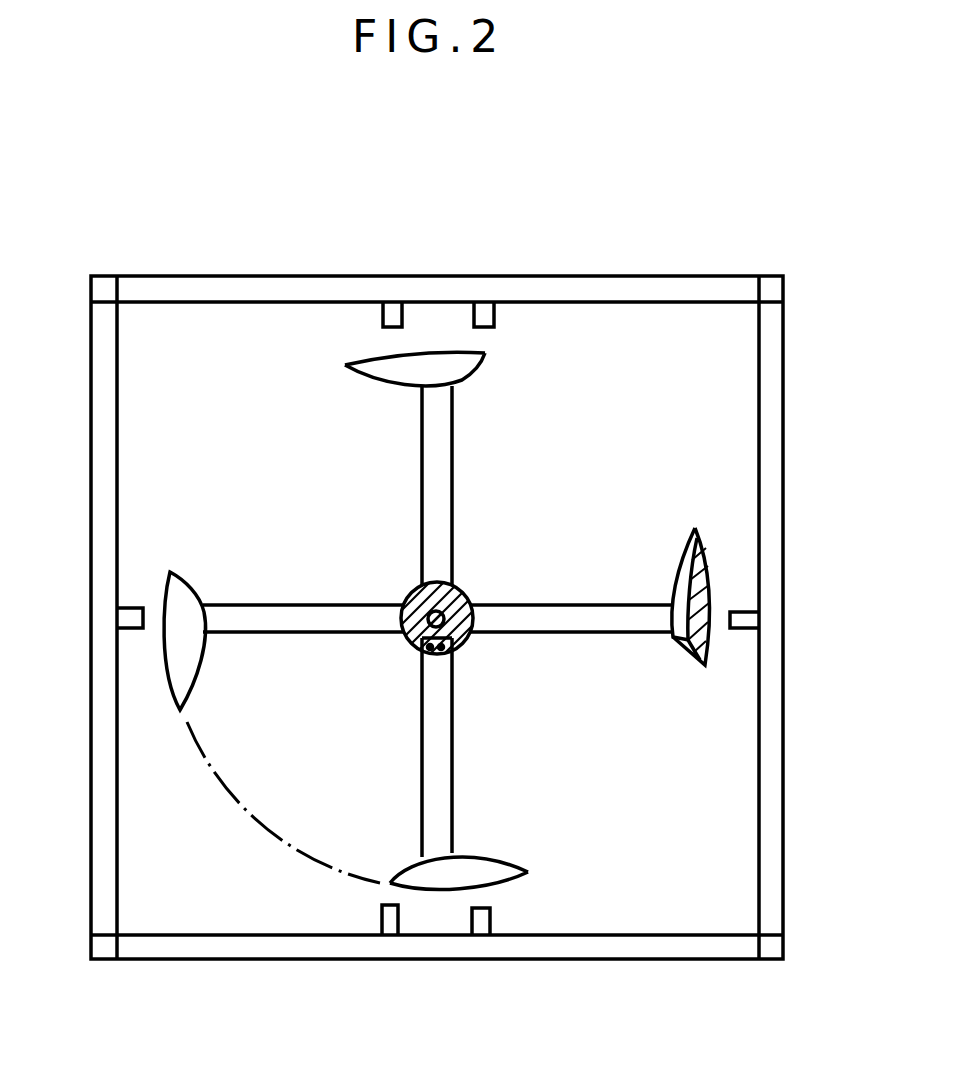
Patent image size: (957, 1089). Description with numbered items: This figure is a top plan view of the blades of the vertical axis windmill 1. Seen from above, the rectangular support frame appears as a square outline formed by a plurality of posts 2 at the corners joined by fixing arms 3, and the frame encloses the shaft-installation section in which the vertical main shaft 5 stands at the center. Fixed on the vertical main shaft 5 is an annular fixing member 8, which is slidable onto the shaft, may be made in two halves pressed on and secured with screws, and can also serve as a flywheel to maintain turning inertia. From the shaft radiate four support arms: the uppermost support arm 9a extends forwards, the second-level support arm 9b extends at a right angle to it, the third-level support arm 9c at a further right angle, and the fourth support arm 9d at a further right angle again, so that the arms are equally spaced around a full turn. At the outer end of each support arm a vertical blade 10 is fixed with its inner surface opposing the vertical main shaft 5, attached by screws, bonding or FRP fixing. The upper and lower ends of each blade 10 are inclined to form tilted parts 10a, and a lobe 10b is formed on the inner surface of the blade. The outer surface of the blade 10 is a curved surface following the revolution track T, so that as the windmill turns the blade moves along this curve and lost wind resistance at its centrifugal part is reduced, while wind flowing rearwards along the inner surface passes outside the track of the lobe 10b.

The vertical axis windmill 1 is at (513, 276).
The post 2 is at (97, 276).
The fixing arm 3 is at (293, 276).
The vertical main shaft 5 is at (422, 598).
The fixing member 8 is at (452, 598).
The uppermost support arm 9a is at (452, 760).
The second-level support arm 9b is at (293, 633).
The third-level support arm 9c is at (422, 462).
The fourth support arm 9d is at (565, 633).
The vertical blade 10 is at (524, 620).
The tilted part 10a is at (683, 575).
The lobe 10b is at (675, 632).
The revolution track T is at (250, 818).